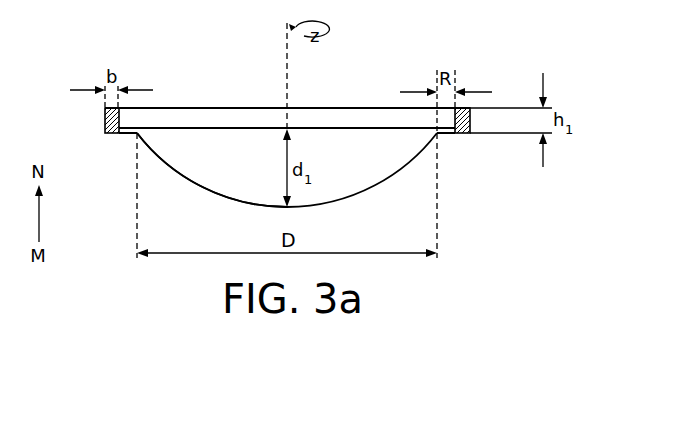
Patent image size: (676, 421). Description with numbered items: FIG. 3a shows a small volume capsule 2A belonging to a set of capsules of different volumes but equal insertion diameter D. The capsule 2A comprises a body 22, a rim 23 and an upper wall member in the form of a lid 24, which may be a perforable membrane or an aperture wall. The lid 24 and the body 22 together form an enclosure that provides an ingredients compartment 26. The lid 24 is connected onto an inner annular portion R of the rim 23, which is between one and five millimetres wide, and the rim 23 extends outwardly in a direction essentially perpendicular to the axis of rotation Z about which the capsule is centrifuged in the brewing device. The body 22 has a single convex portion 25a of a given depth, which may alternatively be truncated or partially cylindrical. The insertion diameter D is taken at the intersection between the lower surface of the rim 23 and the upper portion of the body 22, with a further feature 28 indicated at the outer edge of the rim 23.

The capsule 2A is at (91, 69).
The body 22 is at (368, 190).
The rim 23 is at (122, 134).
The lid 24 is at (348, 128).
The convex portion 25a is at (200, 190).
The ingredients compartment 26 is at (228, 138).
The peripheral rim 28 is at (470, 119).